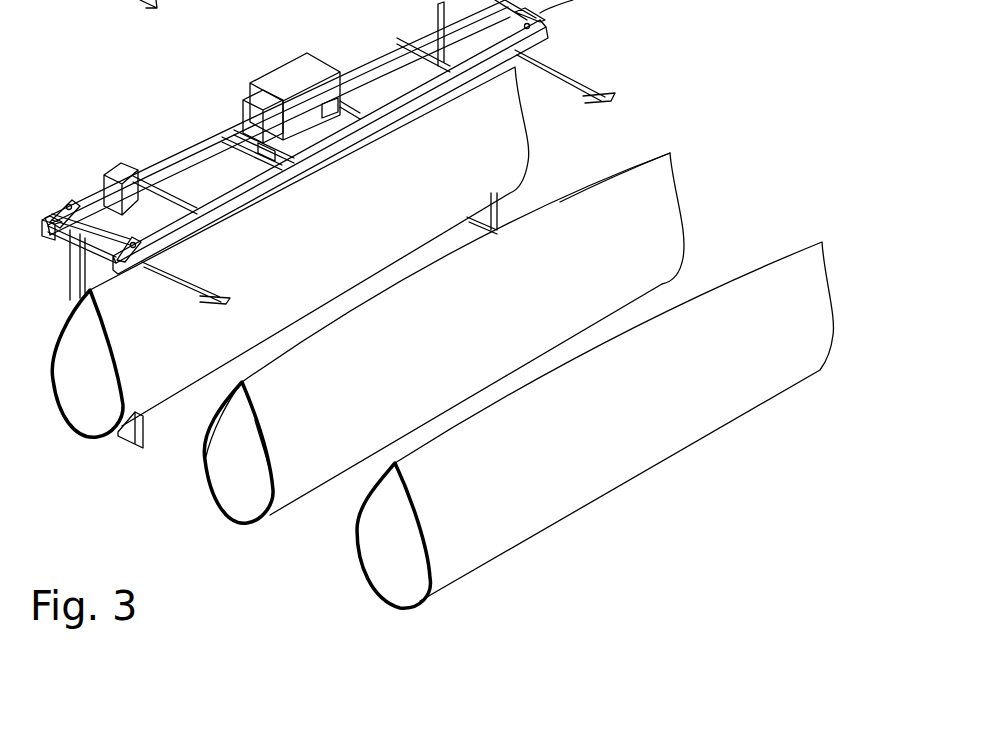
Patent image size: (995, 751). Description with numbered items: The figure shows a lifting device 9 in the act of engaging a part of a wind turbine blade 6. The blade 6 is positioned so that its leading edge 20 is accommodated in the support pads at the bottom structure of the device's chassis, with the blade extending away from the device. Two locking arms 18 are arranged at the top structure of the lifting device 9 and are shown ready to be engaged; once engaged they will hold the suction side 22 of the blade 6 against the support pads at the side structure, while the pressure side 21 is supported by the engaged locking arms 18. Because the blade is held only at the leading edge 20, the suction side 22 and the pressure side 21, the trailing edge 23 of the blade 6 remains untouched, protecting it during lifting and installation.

The lifting device 9 is at (171, 110).
The locking arms 18 is at (572, 72).
The wind turbine blade 6 is at (328, 256).
The trailing edge 23 is at (615, 178).
The suction side 22 is at (203, 458).
The pressure side 21 is at (268, 448).
The leading edge 20 is at (252, 525).